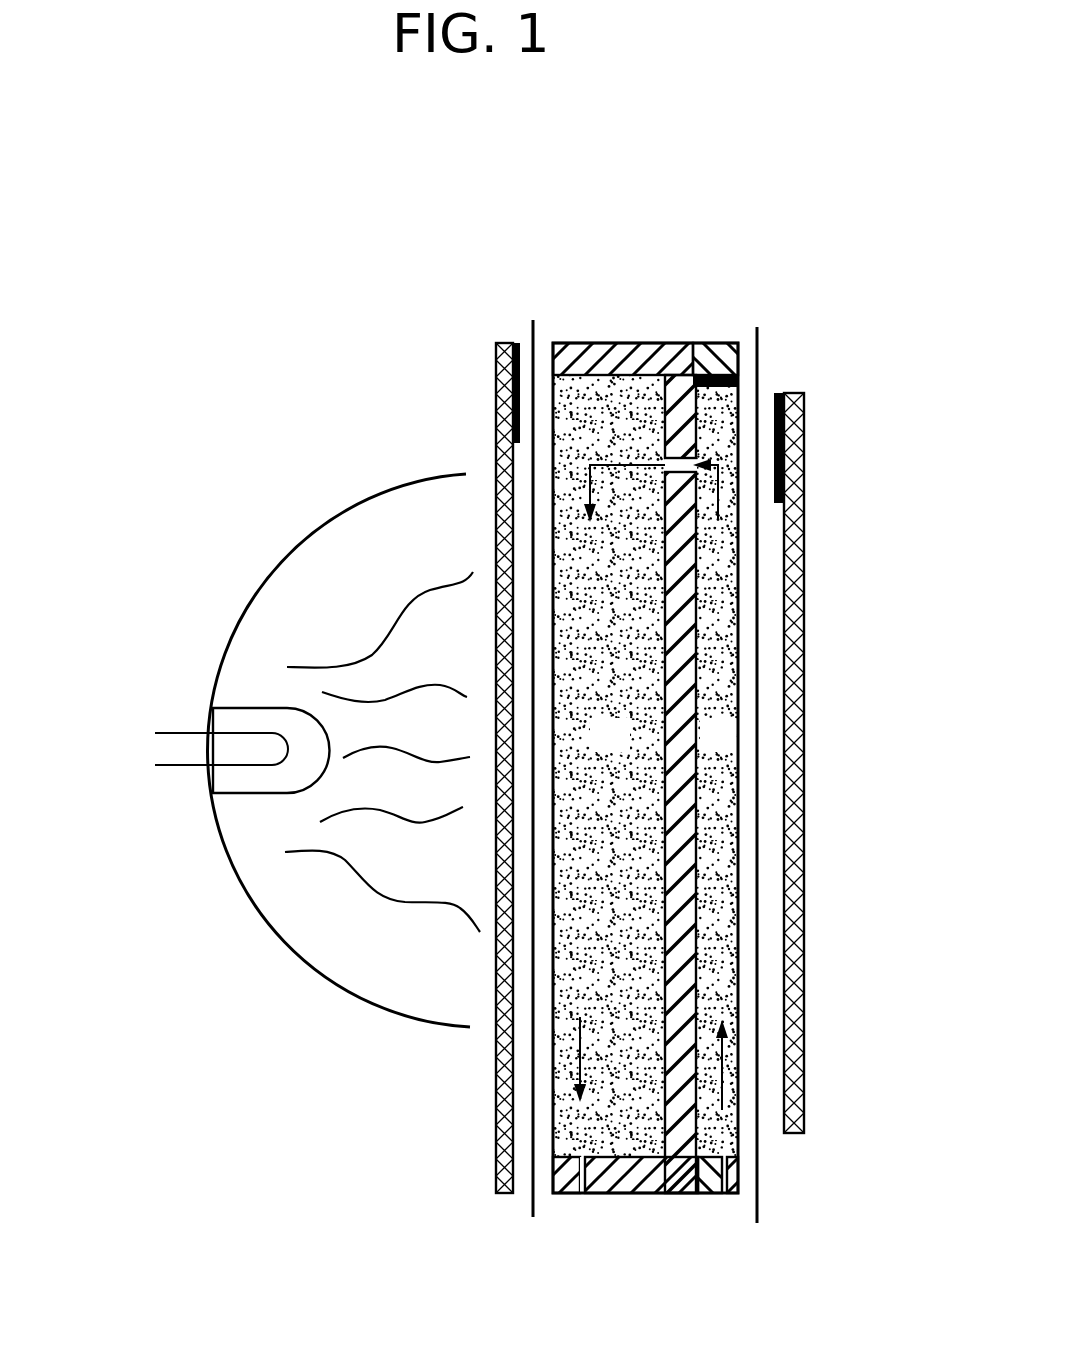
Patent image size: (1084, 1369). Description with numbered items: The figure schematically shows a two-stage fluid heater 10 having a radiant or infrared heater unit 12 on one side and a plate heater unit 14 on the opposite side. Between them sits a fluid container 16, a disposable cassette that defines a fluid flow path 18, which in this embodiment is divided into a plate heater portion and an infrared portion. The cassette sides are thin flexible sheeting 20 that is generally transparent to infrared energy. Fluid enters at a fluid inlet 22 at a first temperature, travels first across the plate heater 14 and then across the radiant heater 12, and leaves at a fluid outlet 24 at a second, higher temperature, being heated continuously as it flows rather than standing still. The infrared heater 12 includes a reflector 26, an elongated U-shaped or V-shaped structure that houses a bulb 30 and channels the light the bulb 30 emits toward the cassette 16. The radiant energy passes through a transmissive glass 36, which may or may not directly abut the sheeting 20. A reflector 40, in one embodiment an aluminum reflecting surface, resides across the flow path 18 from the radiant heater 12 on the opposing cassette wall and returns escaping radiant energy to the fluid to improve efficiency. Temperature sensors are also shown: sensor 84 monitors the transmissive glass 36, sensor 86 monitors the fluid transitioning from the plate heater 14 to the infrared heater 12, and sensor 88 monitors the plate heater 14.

The heater 10 is at (300, 145).
The radiant or infrared heater unit 12 is at (483, 330).
The plate heater unit 14 is at (820, 1126).
The fluid container 16 is at (653, 1195).
The fluid flow path 18 is at (626, 748).
The flexible sheeting 20 is at (533, 1213).
The fluid inlet 22 is at (722, 1195).
The fluid outlet 24 is at (580, 1195).
The reflector 26 is at (268, 553).
The bulb 30 is at (243, 793).
The transmissive glass 36 is at (497, 430).
The reflector 40 is at (662, 950).
The temperature sensor 84 is at (519, 343).
The temperature sensor 86 is at (715, 343).
The temperature sensor 88 is at (774, 393).